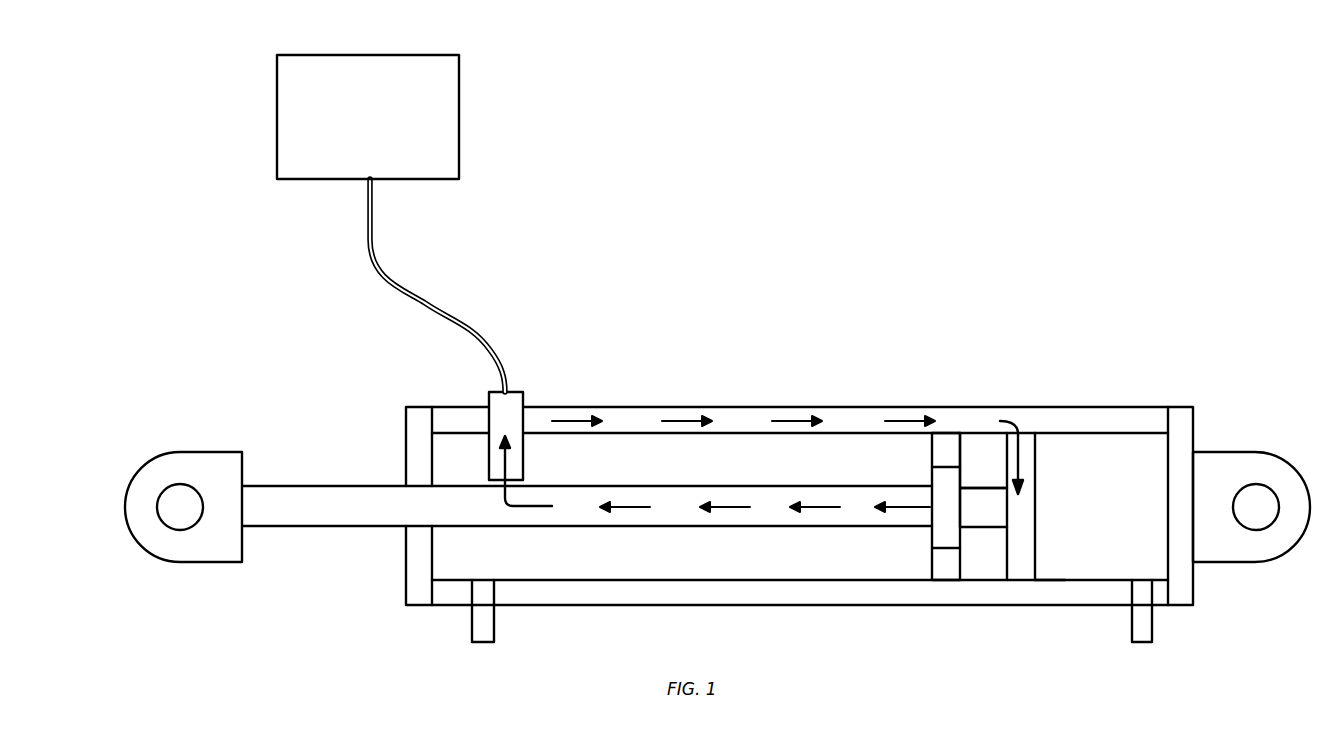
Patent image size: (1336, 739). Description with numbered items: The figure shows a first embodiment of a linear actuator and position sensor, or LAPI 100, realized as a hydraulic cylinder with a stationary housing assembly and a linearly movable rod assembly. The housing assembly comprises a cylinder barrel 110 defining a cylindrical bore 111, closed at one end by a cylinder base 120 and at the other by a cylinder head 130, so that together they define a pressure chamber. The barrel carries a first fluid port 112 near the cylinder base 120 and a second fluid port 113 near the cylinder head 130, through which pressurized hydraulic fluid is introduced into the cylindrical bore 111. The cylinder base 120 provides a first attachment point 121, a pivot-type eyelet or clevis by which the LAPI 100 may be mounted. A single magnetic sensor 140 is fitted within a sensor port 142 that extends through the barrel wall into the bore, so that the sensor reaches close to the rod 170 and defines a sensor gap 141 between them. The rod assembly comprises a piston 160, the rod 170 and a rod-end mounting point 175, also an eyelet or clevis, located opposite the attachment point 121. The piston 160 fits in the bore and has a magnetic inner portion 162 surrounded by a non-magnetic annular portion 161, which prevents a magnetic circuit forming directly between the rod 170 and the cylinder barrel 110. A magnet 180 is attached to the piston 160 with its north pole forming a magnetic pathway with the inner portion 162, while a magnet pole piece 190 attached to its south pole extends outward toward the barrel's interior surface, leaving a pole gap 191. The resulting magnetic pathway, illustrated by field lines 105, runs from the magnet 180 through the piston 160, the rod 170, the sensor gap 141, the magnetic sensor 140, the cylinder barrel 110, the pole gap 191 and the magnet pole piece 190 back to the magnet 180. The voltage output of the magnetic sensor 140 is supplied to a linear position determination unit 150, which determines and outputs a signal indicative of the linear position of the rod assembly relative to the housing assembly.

The LAPI 100 is at (800, 393).
The field lines 105 is at (797, 419).
The cylinder barrel 110 is at (792, 604).
The cylindrical bore 111 is at (690, 580).
The first fluid port 112 is at (1138, 642).
The second fluid port 113 is at (482, 642).
The cylinder base 120 is at (1190, 582).
The first attachment point 121 is at (1275, 452).
The cylinder head 130 is at (410, 565).
The magnetic sensor 140 is at (524, 452).
The sensor gap 141 is at (524, 482).
The sensor port 142 is at (487, 420).
The linear position determination unit 150 is at (353, 128).
The piston 160 is at (910, 506).
The annular portion 161 is at (965, 445).
The inner portion 162 is at (931, 470).
The rod 170 is at (325, 523).
The rod-end mounting point 175 is at (160, 560).
The magnet 180 is at (984, 530).
The magnet pole piece 190 is at (1036, 482).
The pole gap 191 is at (1040, 580).